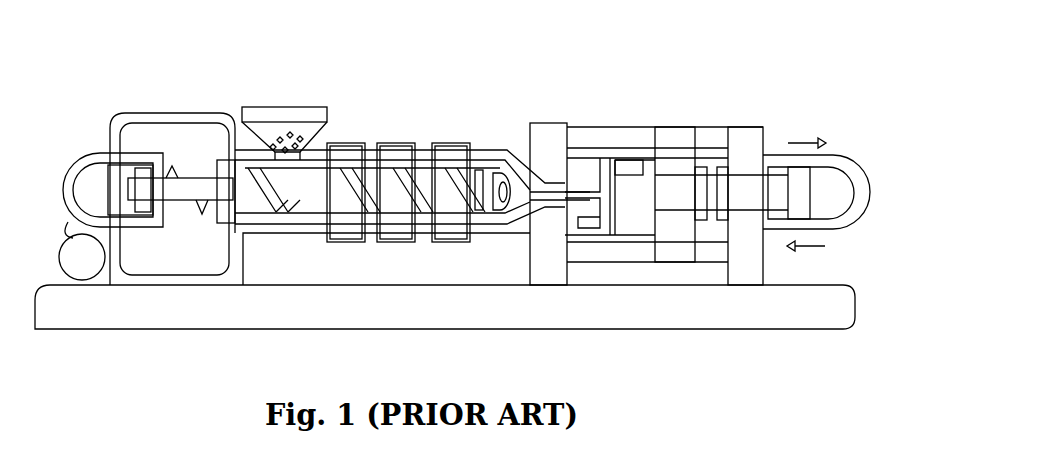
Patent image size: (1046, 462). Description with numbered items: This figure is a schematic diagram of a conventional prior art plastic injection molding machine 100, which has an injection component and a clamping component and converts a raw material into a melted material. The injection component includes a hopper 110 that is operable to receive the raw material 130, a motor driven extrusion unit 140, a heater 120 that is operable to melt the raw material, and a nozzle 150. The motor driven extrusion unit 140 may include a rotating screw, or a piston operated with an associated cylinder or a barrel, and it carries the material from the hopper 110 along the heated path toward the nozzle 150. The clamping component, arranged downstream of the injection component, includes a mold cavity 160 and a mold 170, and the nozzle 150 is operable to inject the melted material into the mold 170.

The injection molding machine 100 is at (727, 70).
The hopper 110 is at (295, 112).
The heater 120 is at (345, 149).
The raw material 130 is at (278, 140).
The motor driven extrusion unit 140 is at (300, 195).
The nozzle 150 is at (548, 203).
The mold cavity 160 is at (605, 175).
The mold 170 is at (673, 135).